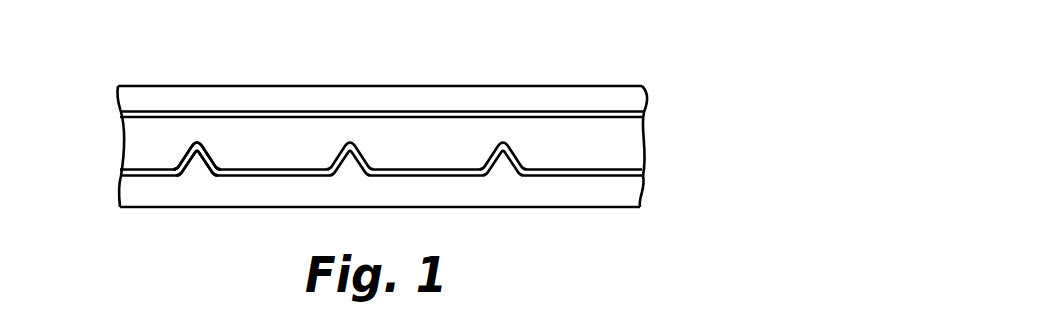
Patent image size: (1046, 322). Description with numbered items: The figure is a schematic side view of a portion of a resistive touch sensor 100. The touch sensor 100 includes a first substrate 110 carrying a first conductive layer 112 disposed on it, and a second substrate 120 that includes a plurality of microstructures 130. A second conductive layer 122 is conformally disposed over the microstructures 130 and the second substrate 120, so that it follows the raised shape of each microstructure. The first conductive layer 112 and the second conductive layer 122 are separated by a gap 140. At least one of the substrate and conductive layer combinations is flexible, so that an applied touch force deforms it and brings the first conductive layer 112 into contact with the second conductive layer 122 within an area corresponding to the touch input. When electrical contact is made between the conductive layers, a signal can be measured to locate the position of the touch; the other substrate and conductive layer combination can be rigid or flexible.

The touch sensor 100 is at (577, 50).
The first substrate 110 is at (641, 100).
The first conductive layer 112 is at (643, 115).
The second substrate 120 is at (615, 198).
The second conductive layer 122 is at (643, 173).
The microstructures 130 is at (193, 163).
The gap 140 is at (430, 132).